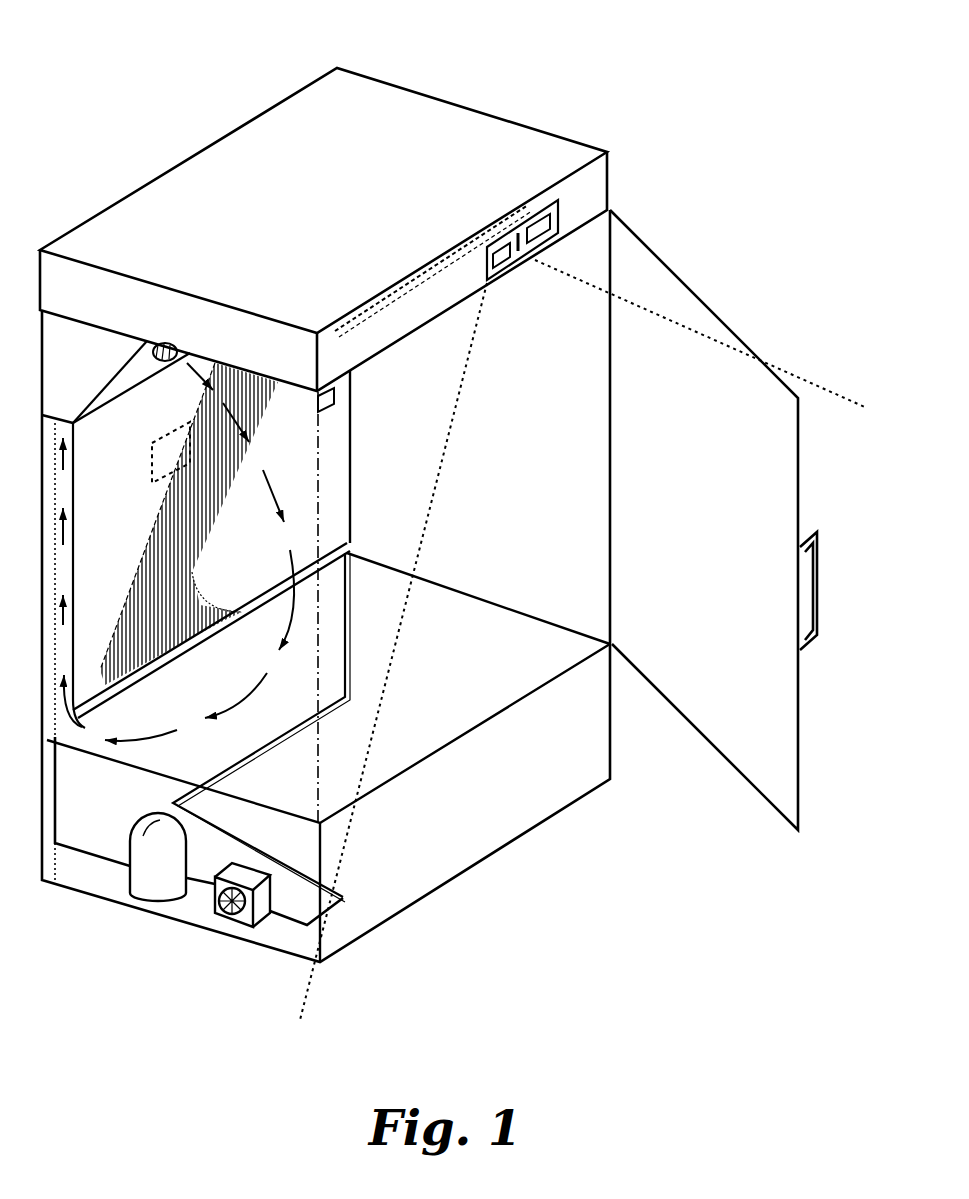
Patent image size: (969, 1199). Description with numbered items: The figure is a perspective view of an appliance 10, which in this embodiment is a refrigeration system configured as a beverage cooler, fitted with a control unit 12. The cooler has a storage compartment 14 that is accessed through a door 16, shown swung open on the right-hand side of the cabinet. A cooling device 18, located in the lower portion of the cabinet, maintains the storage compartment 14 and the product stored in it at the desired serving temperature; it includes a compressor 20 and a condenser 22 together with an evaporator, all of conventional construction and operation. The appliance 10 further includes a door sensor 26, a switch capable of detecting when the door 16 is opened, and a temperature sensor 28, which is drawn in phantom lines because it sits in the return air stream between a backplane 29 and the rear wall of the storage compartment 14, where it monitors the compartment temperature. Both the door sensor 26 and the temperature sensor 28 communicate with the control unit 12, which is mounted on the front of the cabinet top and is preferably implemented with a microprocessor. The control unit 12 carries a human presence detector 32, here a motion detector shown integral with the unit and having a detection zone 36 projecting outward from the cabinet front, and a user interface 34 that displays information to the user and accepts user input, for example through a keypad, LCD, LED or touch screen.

The appliance 10 is at (520, 50).
The control unit 12 is at (481, 182).
The storage compartment 14 is at (440, 675).
The door 16 is at (715, 310).
The cooling device 18 is at (178, 928).
The compressor 20 is at (243, 918).
The condenser 22 is at (143, 895).
The door sensor 26 is at (318, 408).
The temperature sensor 28 is at (152, 463).
The backplane 29 is at (350, 423).
The human presence detector 32 is at (487, 245).
The user interface 34 is at (537, 222).
The detection zone 36 is at (627, 302).